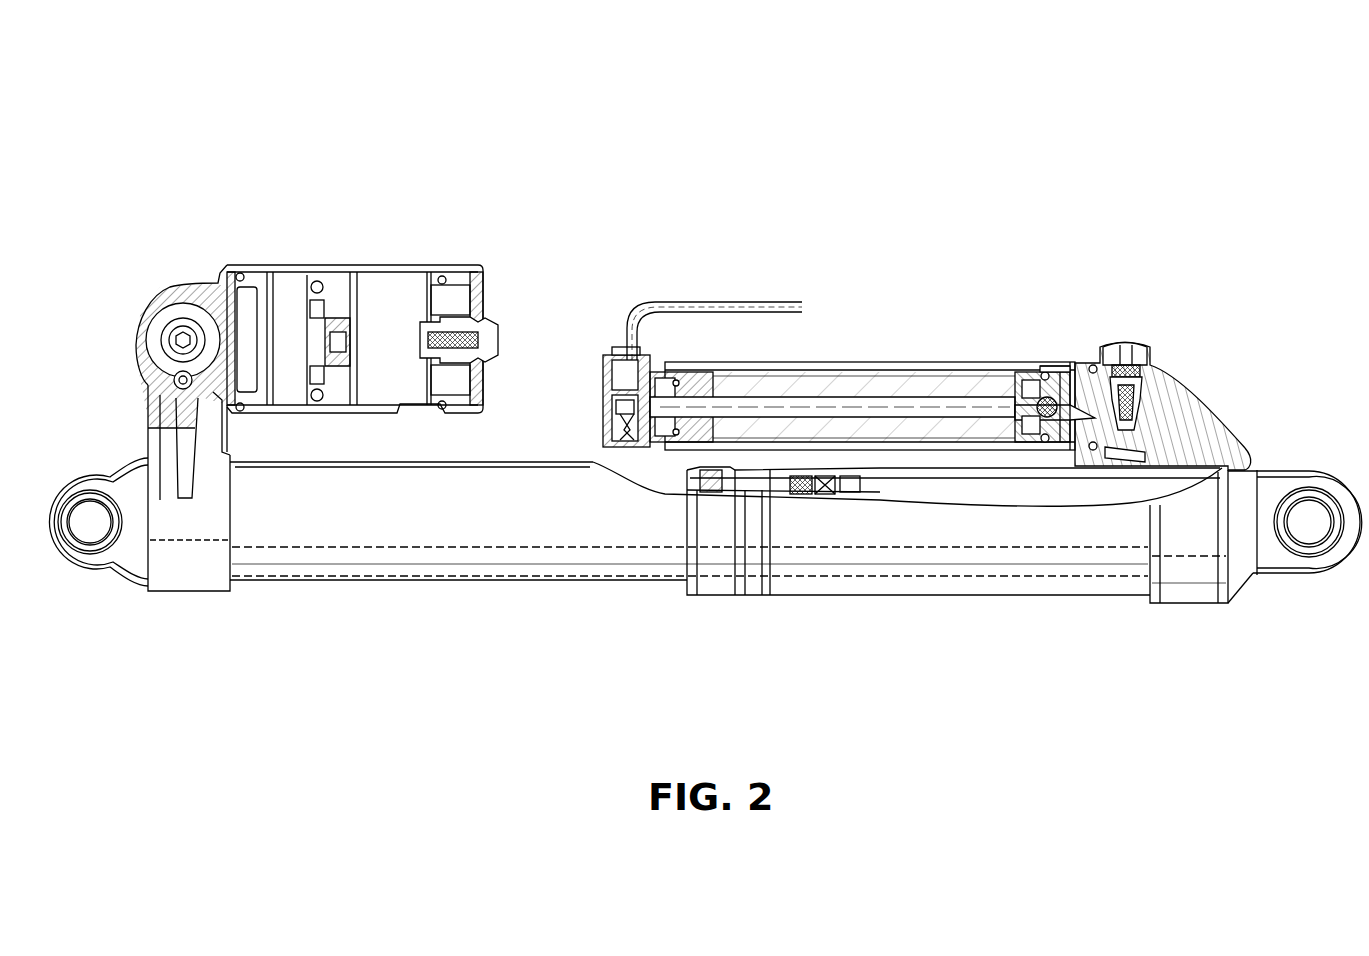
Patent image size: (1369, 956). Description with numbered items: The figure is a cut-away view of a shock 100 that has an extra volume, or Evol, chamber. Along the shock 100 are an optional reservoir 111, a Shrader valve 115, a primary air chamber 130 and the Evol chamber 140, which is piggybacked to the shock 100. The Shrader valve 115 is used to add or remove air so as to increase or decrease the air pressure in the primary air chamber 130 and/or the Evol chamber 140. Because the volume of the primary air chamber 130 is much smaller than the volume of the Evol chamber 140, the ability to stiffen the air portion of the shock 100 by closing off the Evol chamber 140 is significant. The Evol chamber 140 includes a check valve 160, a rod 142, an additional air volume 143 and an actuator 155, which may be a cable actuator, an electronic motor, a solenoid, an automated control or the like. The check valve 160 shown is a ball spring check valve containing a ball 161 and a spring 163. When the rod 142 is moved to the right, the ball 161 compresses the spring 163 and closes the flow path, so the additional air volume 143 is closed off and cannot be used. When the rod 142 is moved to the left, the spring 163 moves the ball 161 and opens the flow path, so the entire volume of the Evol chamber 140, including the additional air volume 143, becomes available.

The shock 100 is at (277, 80).
The reservoir 111 is at (356, 265).
The Shrader valve 115 is at (1149, 348).
The primary air chamber 130 is at (968, 596).
The Evol chamber 140 is at (935, 363).
The rod 142 is at (773, 410).
The additional air volume 143 is at (858, 385).
The actuator 155 is at (610, 342).
The check valve 160 is at (1005, 362).
The ball 161 is at (1062, 372).
The spring 163 is at (1048, 366).